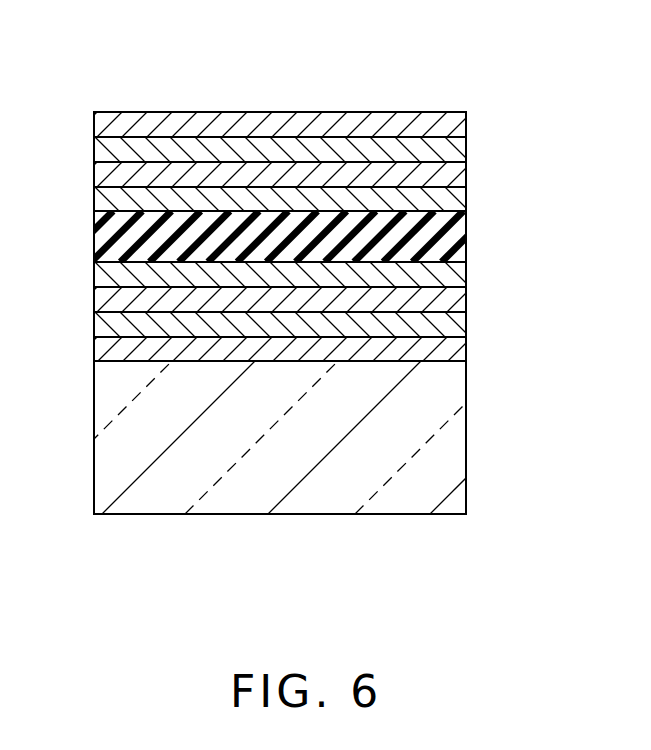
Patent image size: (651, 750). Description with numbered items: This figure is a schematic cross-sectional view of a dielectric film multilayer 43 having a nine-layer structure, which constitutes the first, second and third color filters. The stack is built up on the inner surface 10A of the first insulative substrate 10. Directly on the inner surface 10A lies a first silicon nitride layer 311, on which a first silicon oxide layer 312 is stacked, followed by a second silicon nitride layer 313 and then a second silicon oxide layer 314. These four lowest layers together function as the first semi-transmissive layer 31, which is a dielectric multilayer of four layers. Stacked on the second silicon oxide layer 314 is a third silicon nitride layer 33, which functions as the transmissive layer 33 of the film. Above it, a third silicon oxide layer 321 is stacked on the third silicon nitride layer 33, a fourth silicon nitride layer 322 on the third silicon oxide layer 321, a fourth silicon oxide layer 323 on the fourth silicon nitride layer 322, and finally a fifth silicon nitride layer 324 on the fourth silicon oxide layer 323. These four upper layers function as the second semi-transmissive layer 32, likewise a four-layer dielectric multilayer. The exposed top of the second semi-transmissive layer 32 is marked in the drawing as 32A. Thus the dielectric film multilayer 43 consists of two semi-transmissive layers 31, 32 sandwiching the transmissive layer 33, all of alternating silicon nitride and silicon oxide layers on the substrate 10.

The first insulative substrate 10 is at (110, 433).
The inner surface 10A is at (318, 345).
The first semi-transmissive layer 31 is at (320, 322).
The first silicon nitride layer 311 is at (458, 348).
The first silicon oxide layer 312 is at (458, 322).
The second silicon nitride layer 313 is at (458, 299).
The second silicon oxide layer 314 is at (458, 273).
The second semi-transmissive layer 32 is at (320, 155).
The third silicon oxide layer 321 is at (458, 197).
The fourth silicon nitride layer 322 is at (458, 173).
The fourth silicon oxide layer 323 is at (458, 149).
The fifth silicon nitride layer 324 is at (458, 123).
The surface of second multilayer film 32A is at (206, 107).
The third silicon nitride layer 33 is at (458, 237).
The dielectric film multilayer 43 is at (353, 87).